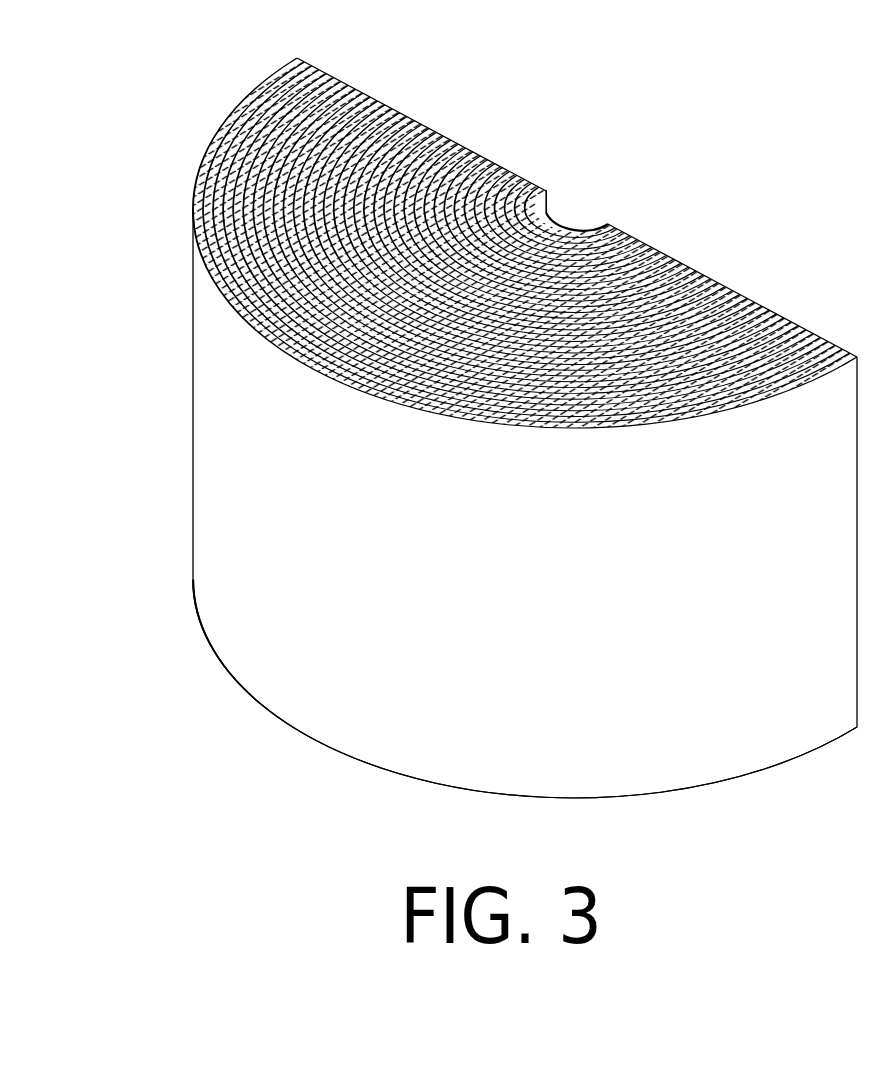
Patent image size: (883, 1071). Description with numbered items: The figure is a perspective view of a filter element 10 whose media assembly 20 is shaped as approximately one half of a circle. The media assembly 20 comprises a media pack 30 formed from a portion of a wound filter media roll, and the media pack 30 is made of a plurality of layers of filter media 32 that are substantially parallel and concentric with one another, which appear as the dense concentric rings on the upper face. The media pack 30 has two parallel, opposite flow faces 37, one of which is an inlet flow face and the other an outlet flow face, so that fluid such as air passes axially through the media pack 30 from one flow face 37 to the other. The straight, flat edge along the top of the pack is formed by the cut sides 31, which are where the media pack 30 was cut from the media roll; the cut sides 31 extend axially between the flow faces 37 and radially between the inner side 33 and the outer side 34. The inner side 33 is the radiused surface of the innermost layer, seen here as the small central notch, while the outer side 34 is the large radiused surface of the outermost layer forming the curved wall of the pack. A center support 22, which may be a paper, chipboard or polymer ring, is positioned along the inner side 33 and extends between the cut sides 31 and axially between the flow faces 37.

The filter element 10 is at (697, 174).
The media assembly 20 is at (445, 465).
The center support 22 is at (593, 223).
The media pack 30 is at (200, 162).
The cut sides 31 is at (348, 92).
The filter media 32 is at (250, 112).
The inner side 33 is at (536, 203).
The outer side 34 is at (228, 512).
The flow faces 37 is at (218, 203).